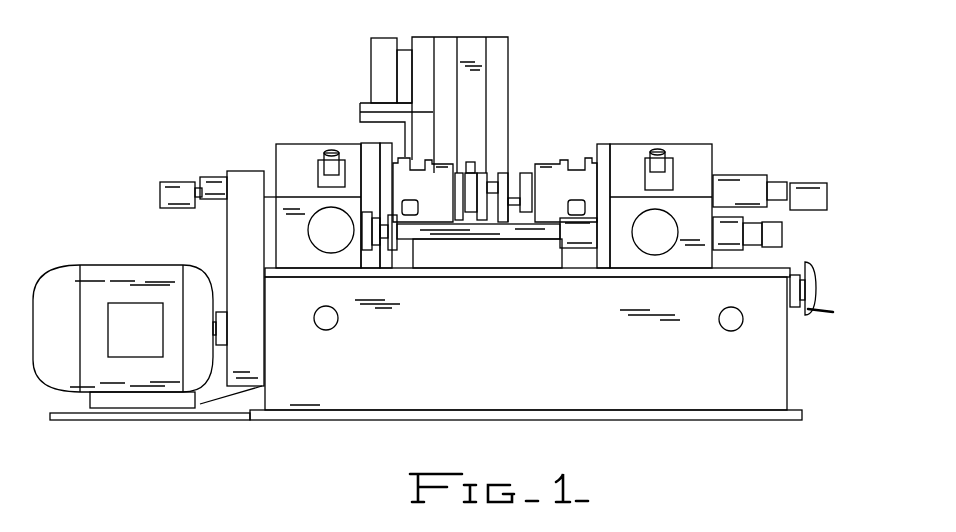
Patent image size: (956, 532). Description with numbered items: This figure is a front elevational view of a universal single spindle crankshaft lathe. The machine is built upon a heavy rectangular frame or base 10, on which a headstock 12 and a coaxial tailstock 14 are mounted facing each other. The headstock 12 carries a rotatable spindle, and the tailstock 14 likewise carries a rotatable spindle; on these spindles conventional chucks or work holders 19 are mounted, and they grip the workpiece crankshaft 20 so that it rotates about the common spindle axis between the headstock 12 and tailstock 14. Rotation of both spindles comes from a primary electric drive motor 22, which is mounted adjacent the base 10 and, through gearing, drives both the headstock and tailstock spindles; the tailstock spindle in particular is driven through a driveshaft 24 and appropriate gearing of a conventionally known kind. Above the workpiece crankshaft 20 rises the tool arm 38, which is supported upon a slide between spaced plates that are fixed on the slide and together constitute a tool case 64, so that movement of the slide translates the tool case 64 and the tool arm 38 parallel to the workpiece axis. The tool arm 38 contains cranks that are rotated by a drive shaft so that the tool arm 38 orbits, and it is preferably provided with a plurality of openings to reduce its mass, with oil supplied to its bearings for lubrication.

The base 10 is at (641, 383).
The headstock 12 is at (290, 152).
The tailstock 14 is at (700, 160).
The work holders 19 is at (441, 196).
The workpiece crankshaft 20 is at (505, 207).
The primary electric drive motor 22 is at (170, 378).
The driveshaft 24 is at (438, 239).
The tool arm 38 is at (468, 48).
The tool case 64 is at (500, 34).